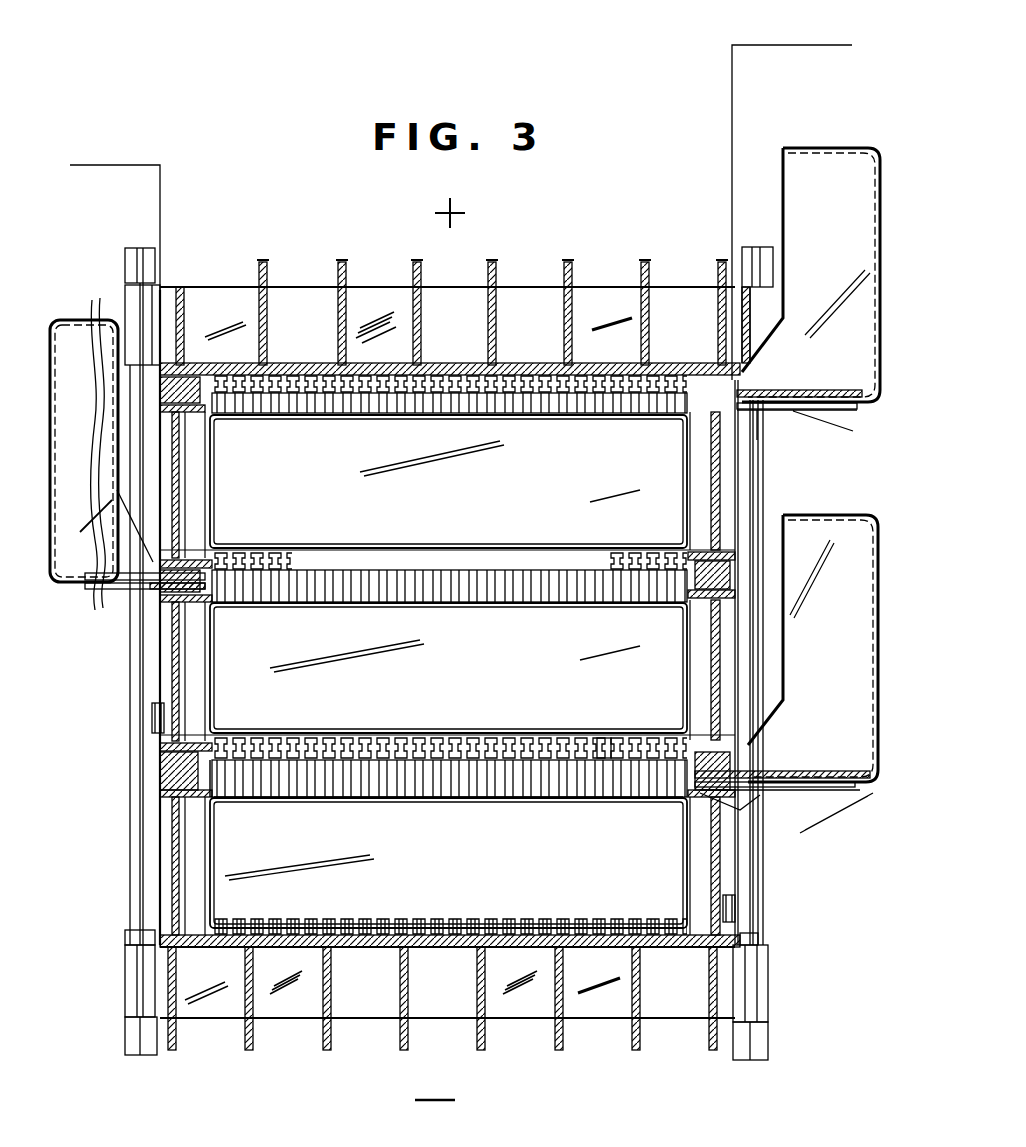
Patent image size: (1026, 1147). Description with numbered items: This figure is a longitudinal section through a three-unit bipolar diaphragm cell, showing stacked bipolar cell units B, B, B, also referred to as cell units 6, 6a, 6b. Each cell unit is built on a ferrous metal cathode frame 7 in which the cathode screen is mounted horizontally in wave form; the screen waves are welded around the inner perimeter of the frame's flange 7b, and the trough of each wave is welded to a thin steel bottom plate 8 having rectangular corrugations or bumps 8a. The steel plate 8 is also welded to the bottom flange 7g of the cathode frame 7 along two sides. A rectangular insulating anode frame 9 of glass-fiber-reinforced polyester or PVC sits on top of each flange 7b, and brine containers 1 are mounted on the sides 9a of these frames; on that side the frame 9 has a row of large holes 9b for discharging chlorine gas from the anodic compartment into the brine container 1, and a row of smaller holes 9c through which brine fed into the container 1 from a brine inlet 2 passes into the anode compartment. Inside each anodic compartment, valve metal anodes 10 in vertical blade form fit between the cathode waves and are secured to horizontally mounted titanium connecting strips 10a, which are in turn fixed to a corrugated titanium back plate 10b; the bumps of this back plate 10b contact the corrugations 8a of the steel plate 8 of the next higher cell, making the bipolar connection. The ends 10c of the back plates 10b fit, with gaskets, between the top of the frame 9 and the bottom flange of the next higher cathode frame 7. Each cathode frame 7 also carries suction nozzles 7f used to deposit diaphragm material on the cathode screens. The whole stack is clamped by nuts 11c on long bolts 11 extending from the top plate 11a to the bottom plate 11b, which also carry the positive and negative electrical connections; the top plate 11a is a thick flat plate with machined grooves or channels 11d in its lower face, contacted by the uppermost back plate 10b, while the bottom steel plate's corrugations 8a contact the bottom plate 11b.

The brine container 1 is at (790, 152).
The brine inlet 2 is at (90, 115).
The cell unit 6 is at (170, 459).
The cell unit 6a is at (166, 662).
The cell unit 6b is at (166, 863).
The cathode frame 7 is at (648, 183).
The flange 7b is at (160, 793).
The suction nozzle 7f is at (152, 717).
The bottom flange 7g is at (189, 937).
The steel bottom plate 8 is at (481, 746).
The corrugations or bumps 8a is at (613, 750).
The insulating anode frame 9 is at (730, 580).
The sides 9a is at (694, 386).
The large holes 9b is at (186, 565).
The smaller holes 9c is at (213, 593).
The valve metal anode 10 is at (456, 493).
The titanium connecting strip 10a is at (397, 790).
The corrugated titanium back plate 10b is at (506, 790).
The ends of back plate 10c is at (206, 760).
The bolt 11 is at (140, 905).
The top plate 11a is at (456, 372).
The bottom plate 11b is at (443, 946).
The nut 11c is at (136, 268).
The grooves or channels 11d is at (333, 372).
The bipolar cell unit B is at (668, 492).